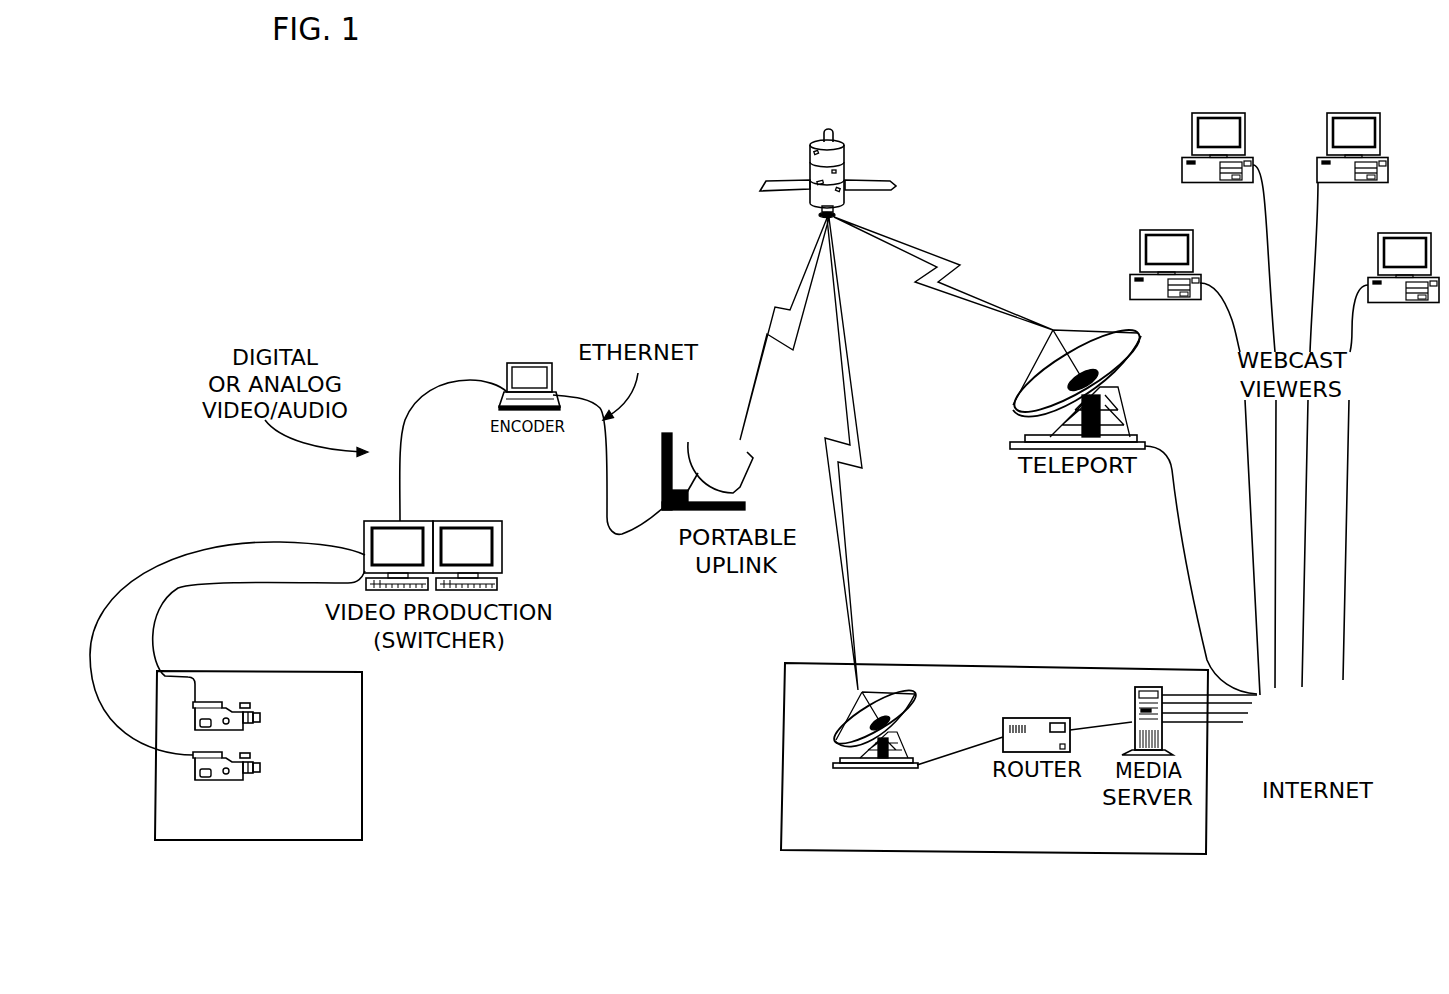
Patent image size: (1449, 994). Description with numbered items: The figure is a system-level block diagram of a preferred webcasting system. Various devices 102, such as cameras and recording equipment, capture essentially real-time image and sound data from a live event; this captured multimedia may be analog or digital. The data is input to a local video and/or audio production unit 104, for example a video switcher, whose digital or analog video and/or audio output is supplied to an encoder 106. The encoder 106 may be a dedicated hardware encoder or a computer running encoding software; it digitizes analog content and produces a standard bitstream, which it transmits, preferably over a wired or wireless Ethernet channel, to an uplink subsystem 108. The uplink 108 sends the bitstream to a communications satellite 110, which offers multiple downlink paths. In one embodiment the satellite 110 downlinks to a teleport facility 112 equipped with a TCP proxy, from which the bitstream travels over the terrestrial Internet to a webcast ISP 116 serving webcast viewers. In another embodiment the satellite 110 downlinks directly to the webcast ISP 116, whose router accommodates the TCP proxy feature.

The devices 102 is at (360, 713).
The local video and/or audio production facility/unit 104 is at (380, 520).
The encoder 106 is at (530, 362).
The uplink subsystem 108 is at (678, 513).
The communications satellite 110 is at (820, 143).
The teleport facility 112 is at (1115, 330).
The webcast ISP 116 is at (782, 782).